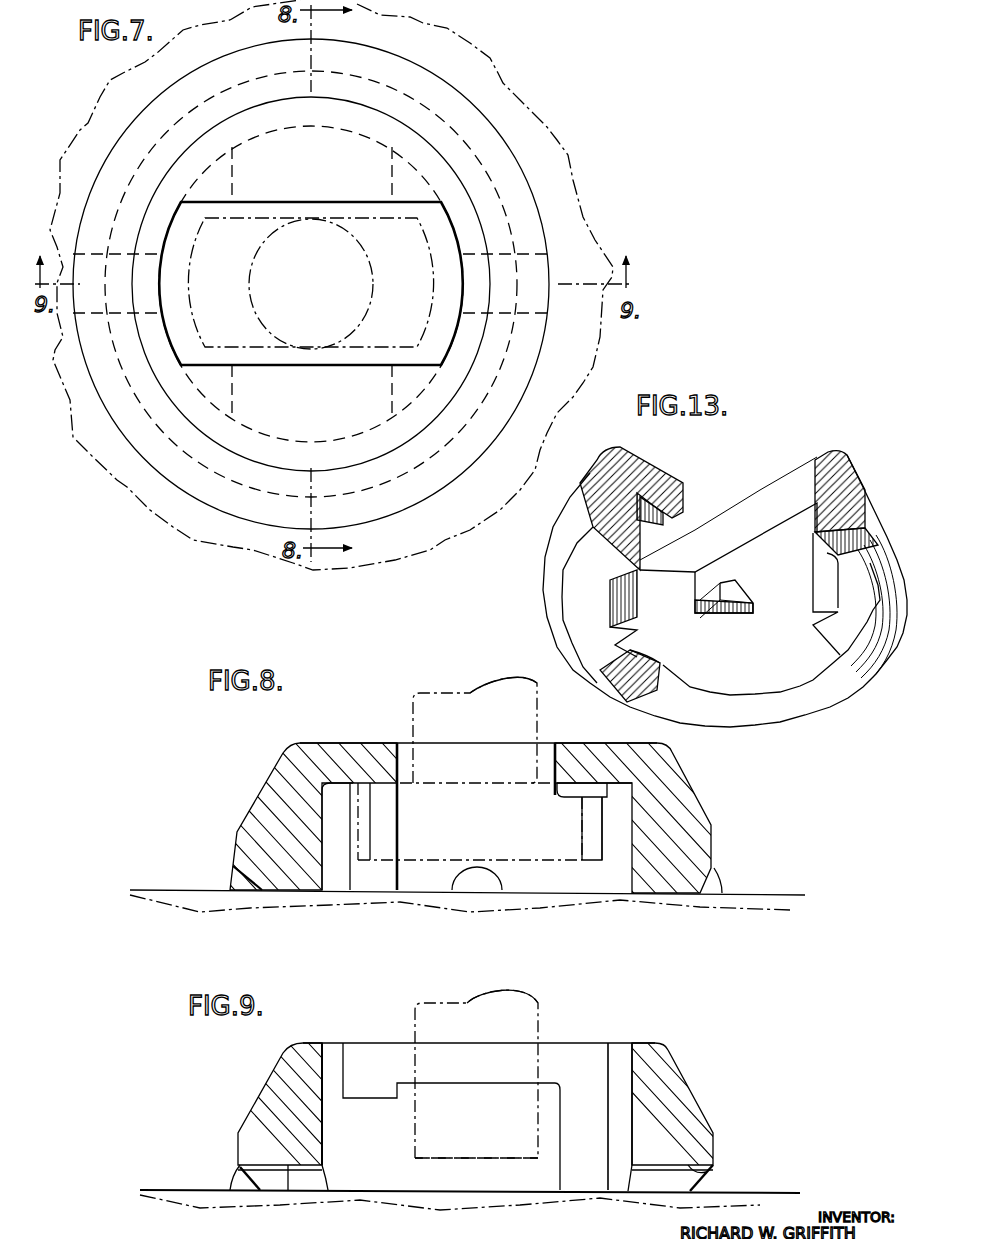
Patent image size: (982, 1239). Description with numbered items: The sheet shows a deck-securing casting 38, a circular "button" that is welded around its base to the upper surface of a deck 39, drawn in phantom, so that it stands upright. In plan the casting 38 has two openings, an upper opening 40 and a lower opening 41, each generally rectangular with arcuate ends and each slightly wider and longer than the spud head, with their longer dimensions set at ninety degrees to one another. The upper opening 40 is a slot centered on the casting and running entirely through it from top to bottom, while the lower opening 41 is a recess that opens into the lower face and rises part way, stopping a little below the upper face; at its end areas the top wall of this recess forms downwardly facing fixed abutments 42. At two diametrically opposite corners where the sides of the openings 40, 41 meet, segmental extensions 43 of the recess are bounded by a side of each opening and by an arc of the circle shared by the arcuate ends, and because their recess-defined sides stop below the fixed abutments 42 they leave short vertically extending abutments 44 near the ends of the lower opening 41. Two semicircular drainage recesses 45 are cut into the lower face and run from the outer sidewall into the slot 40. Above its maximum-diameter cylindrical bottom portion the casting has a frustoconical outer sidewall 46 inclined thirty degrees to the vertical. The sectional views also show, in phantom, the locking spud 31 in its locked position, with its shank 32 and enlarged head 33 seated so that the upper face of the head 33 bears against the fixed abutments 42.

In FIG. 7, the locking spud member 31 is at (423, 232).
In FIG. 8, the locking spud member 31 is at (540, 725).
In FIG. 9, the locking spud member 31 is at (545, 1000).
In FIG. 8, the shank 32 is at (432, 693).
In FIG. 9, the shank 32 is at (425, 1003).
In FIG. 8, the enlarged head 33 is at (538, 858).
In FIG. 9, the enlarged head 33 is at (413, 1155).
In FIG. 7, the casting 38 is at (132, 117).
In FIG. 13, the casting 38 is at (872, 473).
In FIG. 8, the casting 38 is at (280, 756).
In FIG. 9, the casting 38 is at (272, 1064).
In FIG. 7, the deck 39 is at (408, 17).
In FIG. 8, the deck 39 is at (190, 888).
In FIG. 9, the deck 39 is at (206, 1189).
In FIG. 7, the upper opening 40 is at (160, 265).
In FIG. 13, the upper opening 40 is at (815, 480).
In FIG. 8, the upper opening 40 is at (405, 745).
In FIG. 9, the upper opening 40 is at (608, 1058).
In FIG. 7, the lower opening 41 is at (265, 436).
In FIG. 13, the lower opening 41 is at (630, 605).
In FIG. 8, the lower opening 41 is at (323, 875).
In FIG. 9, the lower opening 41 is at (560, 1175).
In FIG. 13, the fixed abutments 42 is at (662, 520).
In FIG. 8, the fixed abutments 42 is at (370, 793).
In FIG. 9, the fixed abutments 42 is at (510, 1085).
In FIG. 7, the extension 43 is at (233, 178).
In FIG. 13, the abutment 44 is at (745, 615).
In FIG. 8, the abutment 44 is at (588, 800).
In FIG. 9, the abutment 44 is at (396, 1093).
In FIG. 7, the arcuate recesses 45 is at (507, 255).
In FIG. 13, the arcuate recesses 45 is at (660, 680).
In FIG. 8, the arcuate recesses 45 is at (465, 890).
In FIG. 9, the arcuate recesses 45 is at (288, 1190).
In FIG. 7, the frustoconical outer sidewall 46 is at (530, 370).
In FIG. 13, the frustoconical outer sidewall 46 is at (592, 488).
In FIG. 8, the frustoconical outer sidewall 46 is at (700, 794).
In FIG. 9, the frustoconical outer sidewall 46 is at (700, 1088).